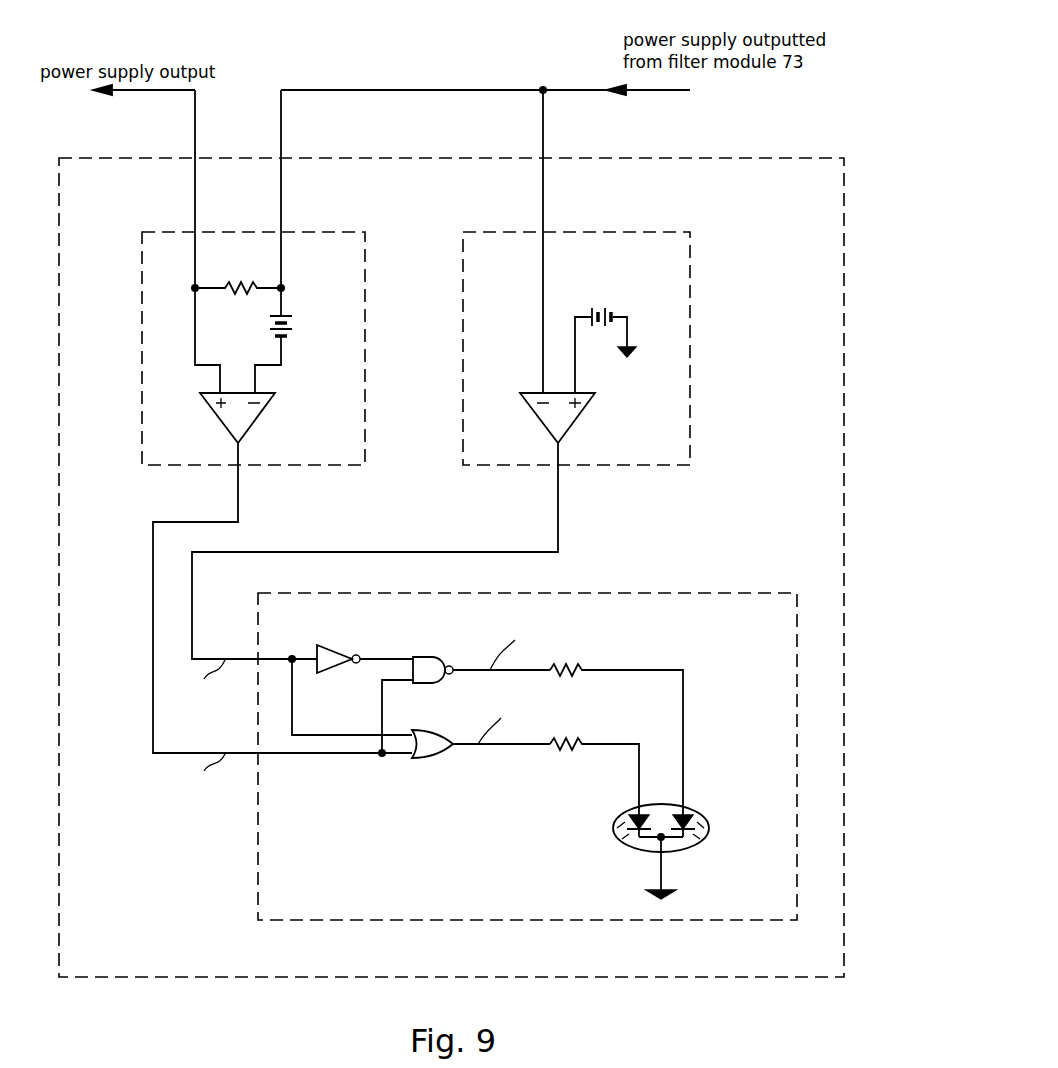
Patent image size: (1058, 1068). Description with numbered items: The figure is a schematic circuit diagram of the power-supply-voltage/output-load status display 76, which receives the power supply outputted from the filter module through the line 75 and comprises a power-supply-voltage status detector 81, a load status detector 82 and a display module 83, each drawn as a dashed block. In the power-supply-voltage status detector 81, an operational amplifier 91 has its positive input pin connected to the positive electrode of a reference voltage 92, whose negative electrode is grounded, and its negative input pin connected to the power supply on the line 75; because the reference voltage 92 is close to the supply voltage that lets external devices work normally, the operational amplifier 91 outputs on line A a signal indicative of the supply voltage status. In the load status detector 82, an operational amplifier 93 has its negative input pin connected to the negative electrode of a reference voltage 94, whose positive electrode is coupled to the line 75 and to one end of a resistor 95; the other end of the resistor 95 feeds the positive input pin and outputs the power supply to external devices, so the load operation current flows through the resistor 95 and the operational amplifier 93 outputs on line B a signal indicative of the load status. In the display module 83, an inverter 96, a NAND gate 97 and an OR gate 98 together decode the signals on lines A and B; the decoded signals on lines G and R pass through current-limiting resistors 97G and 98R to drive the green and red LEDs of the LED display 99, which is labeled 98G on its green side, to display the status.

The line 75 is at (557, 88).
The power-supply-voltage/output-load status display 76 is at (776, 160).
The power-supply-voltage status detector 81 is at (671, 228).
The load status detector 82 is at (344, 229).
The display module 83 is at (720, 588).
The operational amplifier 91 is at (540, 428).
The reference voltage 92 is at (611, 306).
The operational amplifier 93 is at (218, 426).
The reference voltage 94 is at (292, 318).
The resistor 95 is at (245, 283).
The inverter 96 is at (330, 650).
The NAND gate 97 is at (428, 655).
The OR gate 98 is at (426, 760).
The current-limiting resistor 97G is at (557, 663).
The current-limiting resistor 98R is at (570, 739).
The green LED 98G is at (705, 823).
The LED display 99 is at (687, 852).